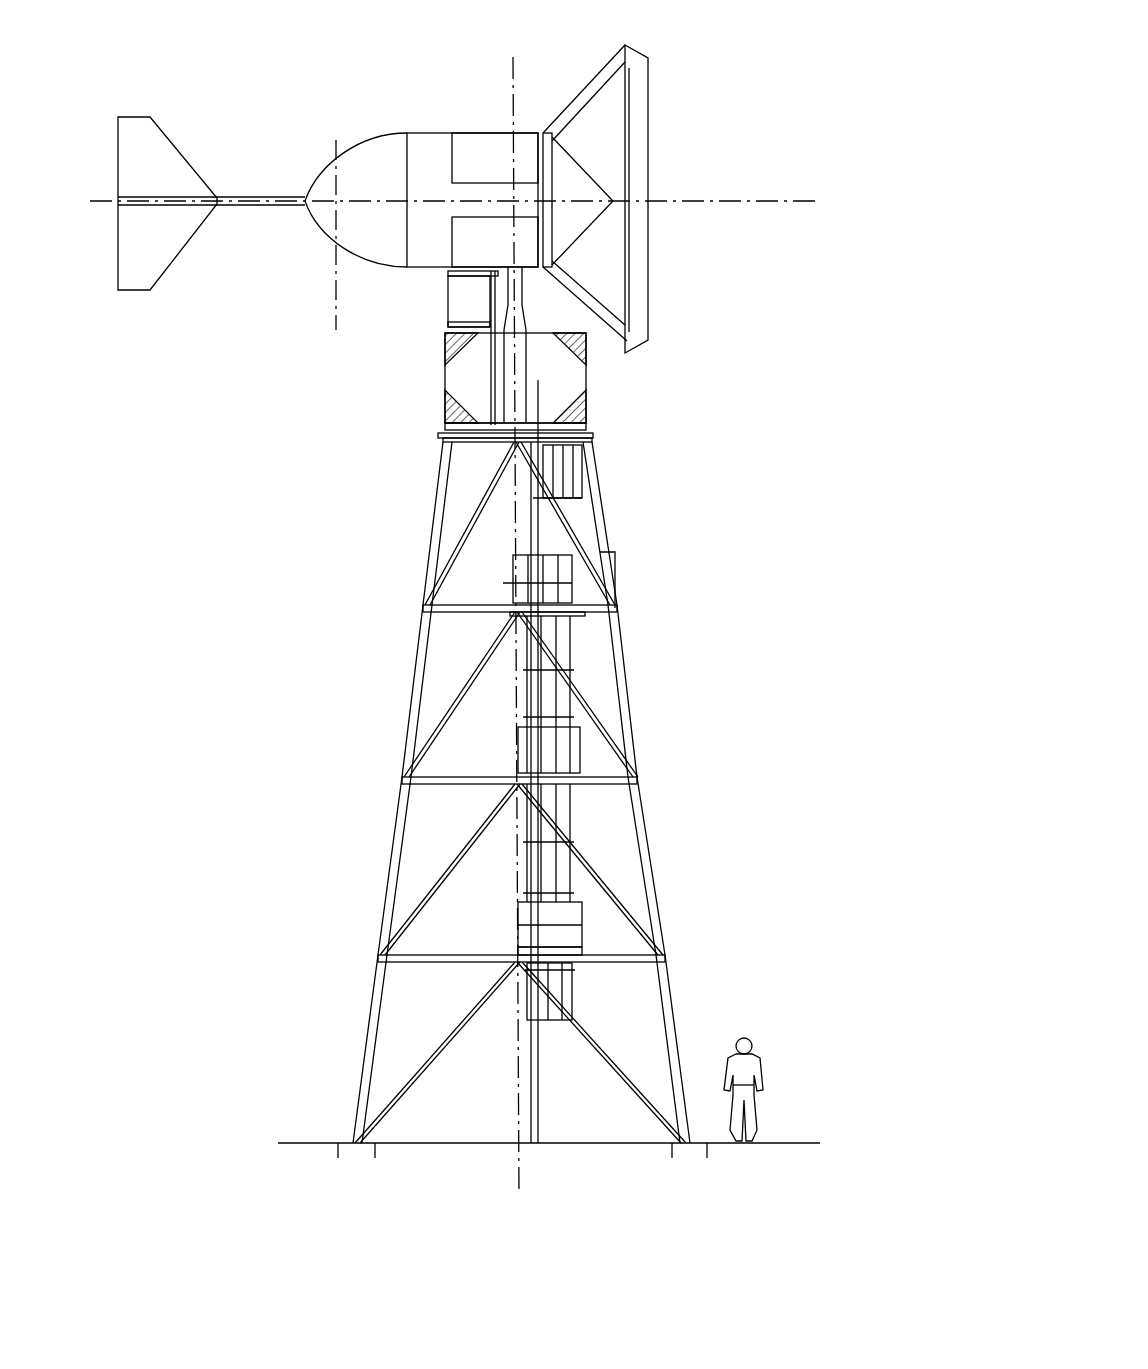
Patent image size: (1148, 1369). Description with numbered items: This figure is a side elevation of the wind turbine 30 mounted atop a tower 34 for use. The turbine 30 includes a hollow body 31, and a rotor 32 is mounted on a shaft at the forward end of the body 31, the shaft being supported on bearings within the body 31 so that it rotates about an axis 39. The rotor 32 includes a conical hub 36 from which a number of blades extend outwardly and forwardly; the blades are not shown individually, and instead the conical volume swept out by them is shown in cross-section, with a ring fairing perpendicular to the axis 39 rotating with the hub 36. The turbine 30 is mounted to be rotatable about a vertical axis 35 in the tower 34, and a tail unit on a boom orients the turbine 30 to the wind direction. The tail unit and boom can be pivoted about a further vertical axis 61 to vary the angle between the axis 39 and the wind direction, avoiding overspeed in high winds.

The wind turbine 30 is at (350, 62).
The hollow body 31 is at (426, 148).
The rotor 32 is at (649, 284).
The tower 34 is at (623, 680).
The vertical axis 35 is at (513, 76).
The conical hub 36 is at (140, 292).
The axis 39 is at (752, 200).
The vertical axis 61 is at (335, 312).